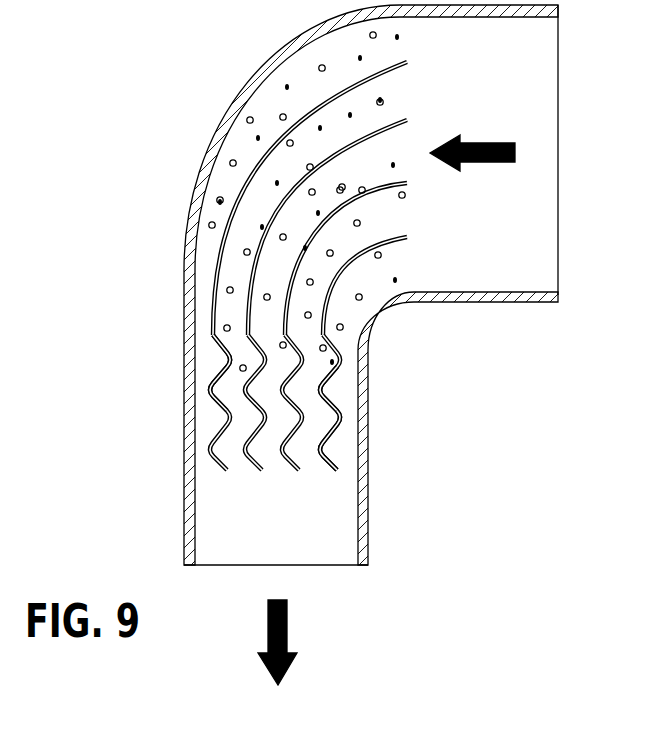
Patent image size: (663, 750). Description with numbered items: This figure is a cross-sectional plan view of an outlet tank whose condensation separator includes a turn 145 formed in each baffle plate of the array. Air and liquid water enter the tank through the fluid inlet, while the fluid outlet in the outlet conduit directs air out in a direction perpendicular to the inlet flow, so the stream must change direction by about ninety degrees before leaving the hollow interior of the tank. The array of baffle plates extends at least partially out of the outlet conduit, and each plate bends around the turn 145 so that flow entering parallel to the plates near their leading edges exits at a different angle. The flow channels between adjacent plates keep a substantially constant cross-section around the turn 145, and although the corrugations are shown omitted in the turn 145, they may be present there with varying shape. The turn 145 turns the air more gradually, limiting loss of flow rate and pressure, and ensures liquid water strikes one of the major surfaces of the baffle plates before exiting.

The turn 145 is at (327, 160).